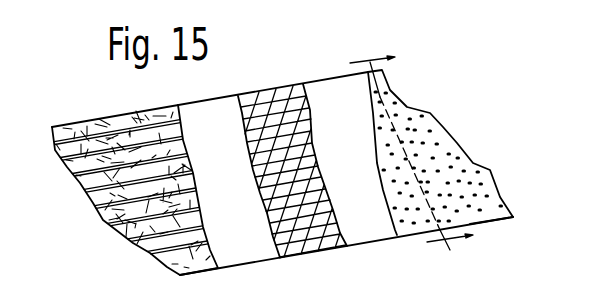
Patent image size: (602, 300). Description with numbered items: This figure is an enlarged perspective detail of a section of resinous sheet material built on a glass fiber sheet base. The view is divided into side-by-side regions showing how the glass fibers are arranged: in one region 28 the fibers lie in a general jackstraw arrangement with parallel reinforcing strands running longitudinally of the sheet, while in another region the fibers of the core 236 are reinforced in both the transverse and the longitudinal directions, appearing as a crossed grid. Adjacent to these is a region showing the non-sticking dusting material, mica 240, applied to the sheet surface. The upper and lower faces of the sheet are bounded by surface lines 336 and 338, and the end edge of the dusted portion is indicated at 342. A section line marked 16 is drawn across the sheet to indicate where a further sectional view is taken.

The fibrous ground/root layer 28 is at (133, 233).
The core 236 is at (246, 242).
The mica 240 is at (423, 143).
The upper surface line 336 is at (278, 105).
The lower boundary line 338 is at (367, 223).
The end edge of granular layer 342 is at (492, 207).
The section line 16- 16 is at (411, 155).